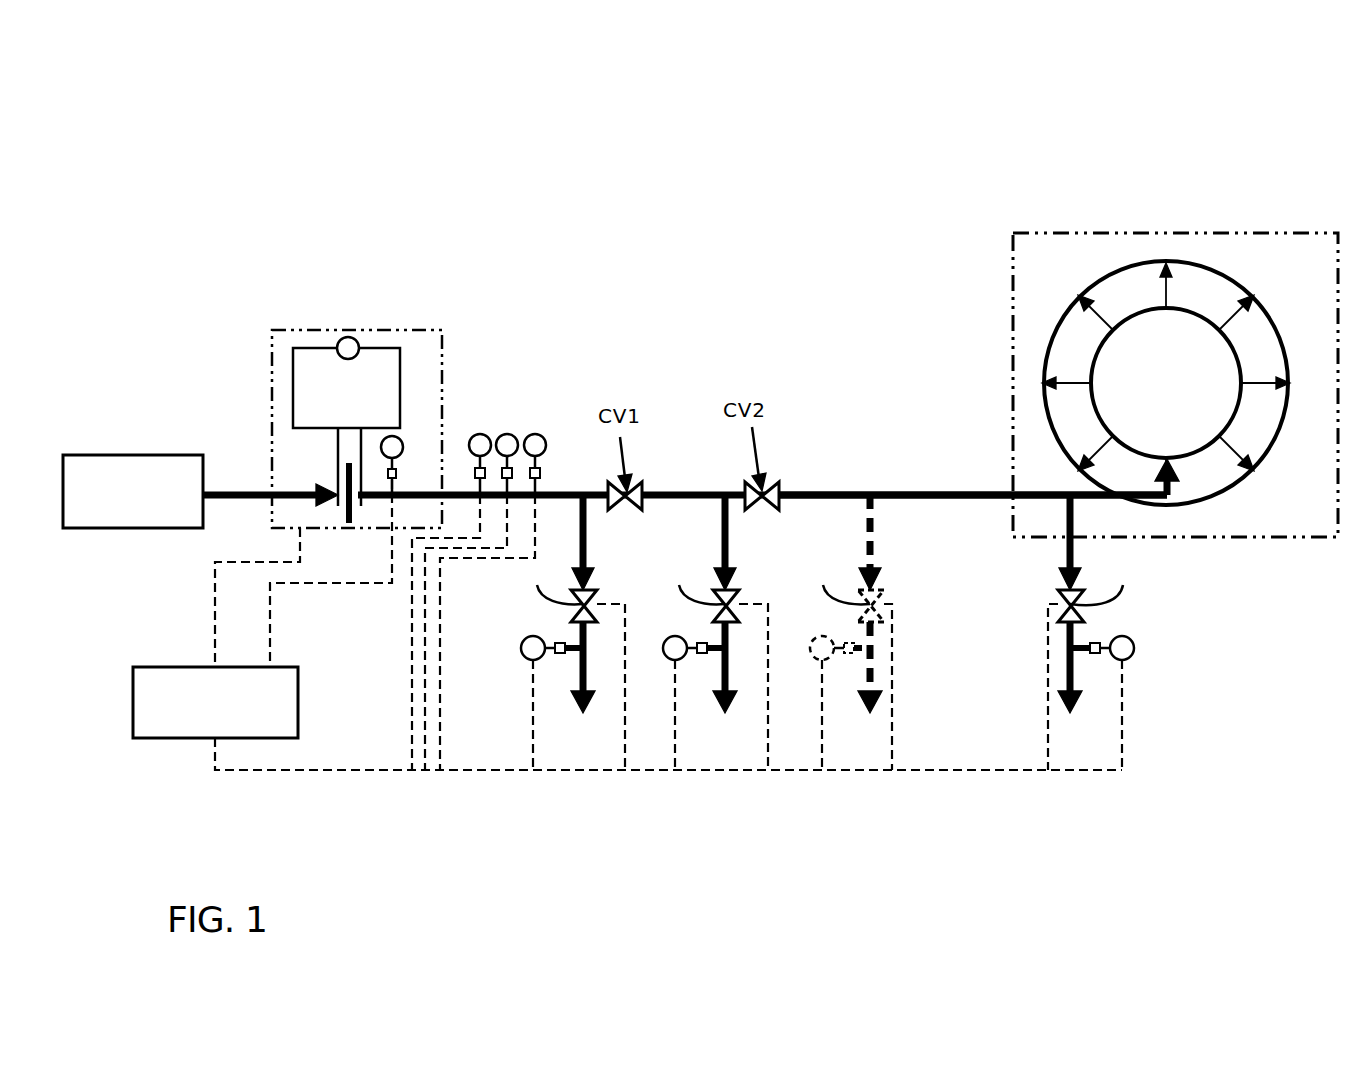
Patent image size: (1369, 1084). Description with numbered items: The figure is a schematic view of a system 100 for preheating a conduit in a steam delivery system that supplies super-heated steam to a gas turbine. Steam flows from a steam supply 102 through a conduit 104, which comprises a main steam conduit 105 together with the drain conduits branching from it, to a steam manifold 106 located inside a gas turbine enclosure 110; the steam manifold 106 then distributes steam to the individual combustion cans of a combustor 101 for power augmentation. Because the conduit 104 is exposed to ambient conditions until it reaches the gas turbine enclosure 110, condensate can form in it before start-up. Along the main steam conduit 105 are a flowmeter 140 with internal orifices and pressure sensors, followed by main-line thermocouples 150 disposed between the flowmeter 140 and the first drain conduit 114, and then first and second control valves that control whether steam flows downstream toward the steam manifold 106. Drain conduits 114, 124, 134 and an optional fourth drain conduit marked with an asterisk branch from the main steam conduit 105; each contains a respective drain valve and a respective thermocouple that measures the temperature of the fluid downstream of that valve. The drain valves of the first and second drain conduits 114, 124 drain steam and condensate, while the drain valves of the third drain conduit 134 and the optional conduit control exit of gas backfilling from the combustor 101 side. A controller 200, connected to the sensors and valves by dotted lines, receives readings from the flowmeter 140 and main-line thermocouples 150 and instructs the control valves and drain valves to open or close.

The system 100 is at (255, 173).
The steam supply 102 is at (158, 455).
The flowmeter 140 is at (262, 418).
The main-line thermocouples 150 is at (544, 433).
The conduit 104 is at (819, 478).
The main steam conduit 105 is at (955, 493).
The gas turbine enclosure 110 is at (1074, 219).
The combustor 101 is at (1218, 273).
The steam manifold 106 is at (1093, 362).
The controller 200 is at (180, 667).
The first drain conduit 114 is at (582, 748).
The second drain conduit 124 is at (724, 748).
The third drain conduit 134 is at (1070, 748).